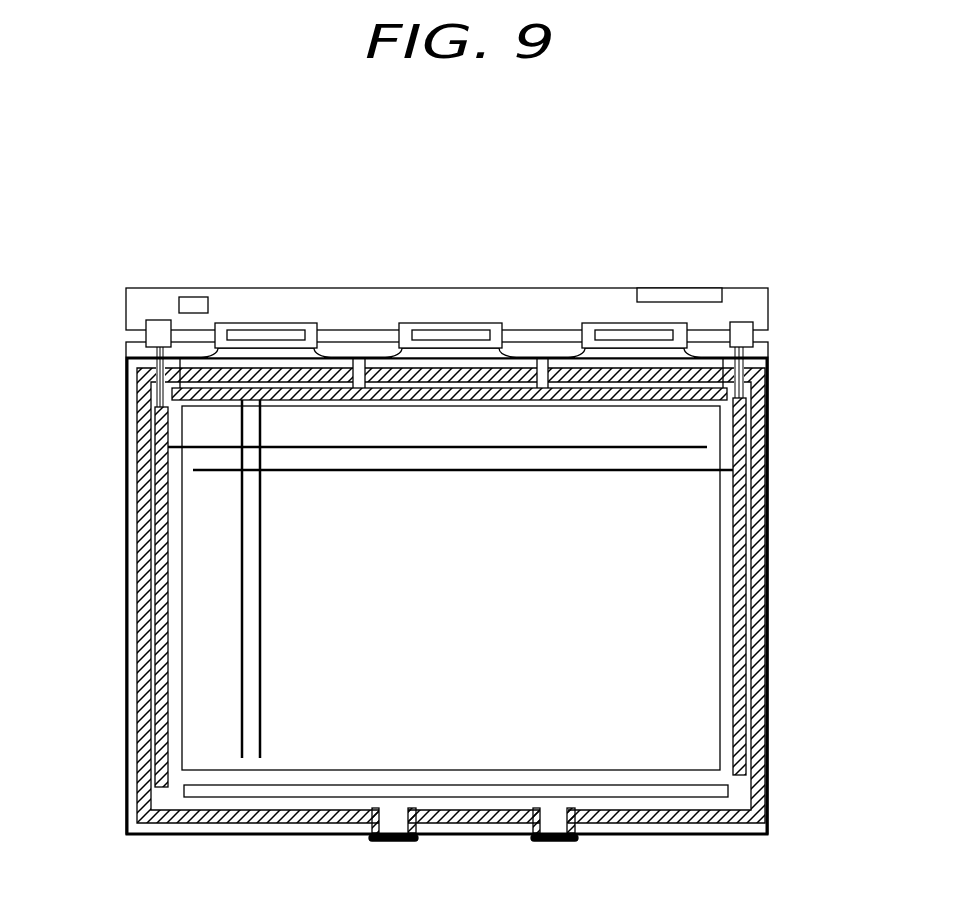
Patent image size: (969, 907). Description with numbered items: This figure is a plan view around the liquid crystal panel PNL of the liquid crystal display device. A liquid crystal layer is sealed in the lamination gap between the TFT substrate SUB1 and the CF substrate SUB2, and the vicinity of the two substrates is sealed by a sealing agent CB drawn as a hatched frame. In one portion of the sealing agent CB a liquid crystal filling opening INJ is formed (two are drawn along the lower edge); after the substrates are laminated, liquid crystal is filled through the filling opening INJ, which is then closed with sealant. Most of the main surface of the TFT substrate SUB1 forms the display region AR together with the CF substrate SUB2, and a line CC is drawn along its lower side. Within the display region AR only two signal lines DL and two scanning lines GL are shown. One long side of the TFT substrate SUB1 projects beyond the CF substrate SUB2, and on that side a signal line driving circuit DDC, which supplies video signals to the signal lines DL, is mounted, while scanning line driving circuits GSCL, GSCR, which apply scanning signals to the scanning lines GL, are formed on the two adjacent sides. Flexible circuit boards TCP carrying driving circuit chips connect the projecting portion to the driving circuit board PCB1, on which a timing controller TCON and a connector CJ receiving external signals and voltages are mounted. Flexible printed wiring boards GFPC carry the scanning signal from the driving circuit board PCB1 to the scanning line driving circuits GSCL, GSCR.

The liquid crystal panel PNL is at (634, 195).
The TFT substrate SUB1 is at (770, 341).
The CF substrate SUB2 is at (767, 357).
The driving circuit board PCB1 is at (133, 313).
The timing controller TCON is at (193, 302).
The flexible circuit board (Tape Carrier Package) TCP is at (270, 323).
The signal line driving circuit DDC is at (527, 395).
The printed wiring board GFPC is at (155, 325).
The connector CJ is at (692, 298).
The scanning line driving circuit GSCL is at (160, 650).
The scanning line driving circuit GSCR is at (740, 642).
The sealing agent CB is at (142, 597).
The display region AR is at (451, 588).
The scanning line GL is at (538, 448).
The signal line DL is at (262, 555).
The common line CC is at (303, 797).
The liquid crystal filling opening INJ is at (397, 852).